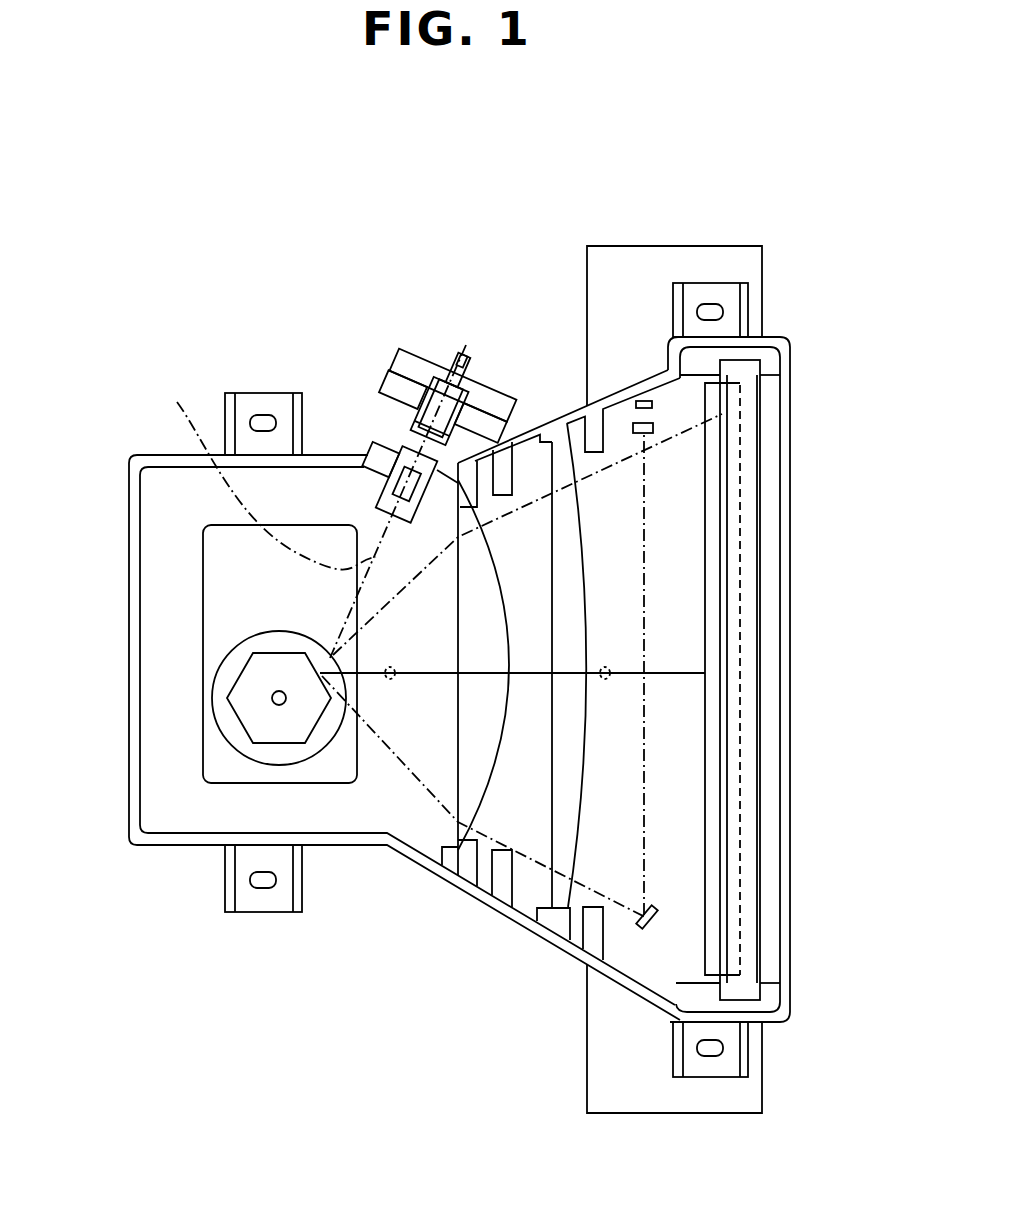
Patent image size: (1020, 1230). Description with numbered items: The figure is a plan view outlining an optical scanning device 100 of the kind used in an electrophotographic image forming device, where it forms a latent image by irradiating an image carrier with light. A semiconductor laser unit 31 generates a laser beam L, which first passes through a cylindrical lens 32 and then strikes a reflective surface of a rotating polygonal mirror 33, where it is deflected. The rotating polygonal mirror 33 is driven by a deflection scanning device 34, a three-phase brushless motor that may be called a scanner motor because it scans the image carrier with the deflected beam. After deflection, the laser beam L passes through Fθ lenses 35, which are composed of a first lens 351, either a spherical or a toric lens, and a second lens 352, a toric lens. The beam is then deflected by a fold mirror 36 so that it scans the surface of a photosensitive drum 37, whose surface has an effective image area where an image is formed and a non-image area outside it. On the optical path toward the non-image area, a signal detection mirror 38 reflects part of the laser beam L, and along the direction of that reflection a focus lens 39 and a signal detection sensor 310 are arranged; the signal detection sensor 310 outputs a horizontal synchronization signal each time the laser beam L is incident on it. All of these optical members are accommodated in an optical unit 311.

The optical scanning device 100 is at (754, 73).
The semiconductor laser unit 31 is at (461, 348).
The cylindrical lens 32 is at (368, 456).
The rotating polygonal mirror 33 is at (248, 682).
The deflection scanning device 34 is at (220, 726).
The Fθ lenses 35 is at (510, 985).
The first lens 351 is at (465, 770).
The second lens 352 is at (562, 833).
The fold mirror 36 is at (746, 490).
The photosensitive drum 37 is at (752, 249).
The signal detection mirror 38 is at (637, 923).
The focus lens 39 is at (653, 428).
The signal detection sensor 310 is at (652, 404).
The optical unit 311 is at (146, 490).
The laser beam L is at (271, 474).